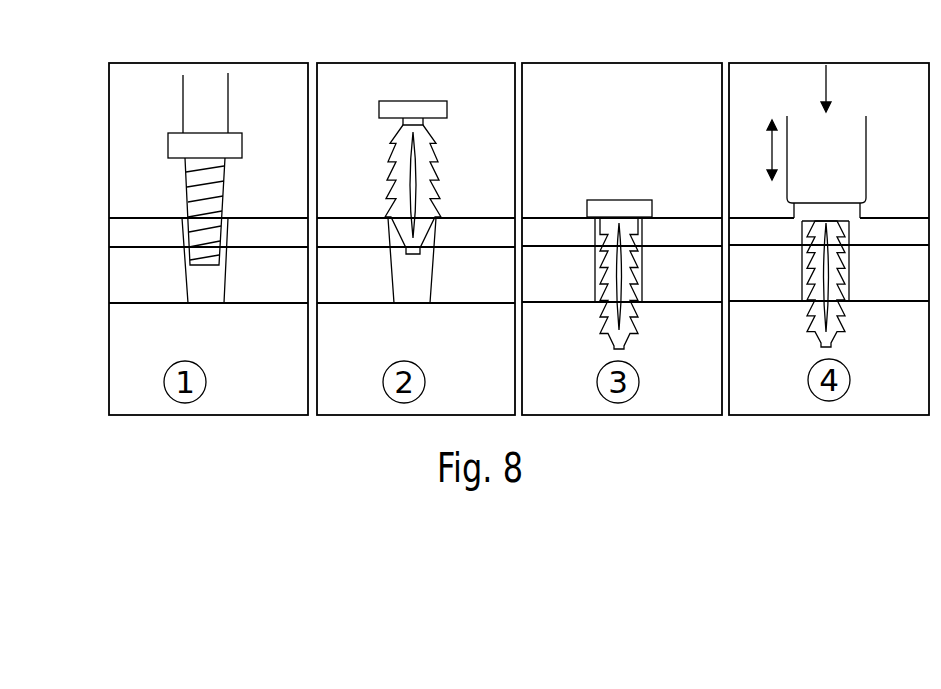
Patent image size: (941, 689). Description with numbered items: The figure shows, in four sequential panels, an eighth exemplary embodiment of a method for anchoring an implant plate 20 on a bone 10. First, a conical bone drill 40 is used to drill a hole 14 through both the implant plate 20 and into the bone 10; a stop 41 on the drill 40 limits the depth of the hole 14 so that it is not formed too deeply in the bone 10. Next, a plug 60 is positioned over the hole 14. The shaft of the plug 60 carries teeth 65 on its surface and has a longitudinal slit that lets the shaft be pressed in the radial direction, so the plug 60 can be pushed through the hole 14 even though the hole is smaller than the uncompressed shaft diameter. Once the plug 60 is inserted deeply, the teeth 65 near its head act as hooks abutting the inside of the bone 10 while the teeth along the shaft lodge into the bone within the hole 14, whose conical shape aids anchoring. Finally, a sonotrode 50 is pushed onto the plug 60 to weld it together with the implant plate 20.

The bone 10 is at (122, 287).
The hole 14 is at (198, 293).
The implant plate 20 is at (122, 241).
The conical bone drill 40 is at (195, 105).
The stop 41 is at (235, 165).
The sonotrode 50 is at (792, 137).
The plug 60 is at (444, 138).
The teeth 65 is at (442, 205).